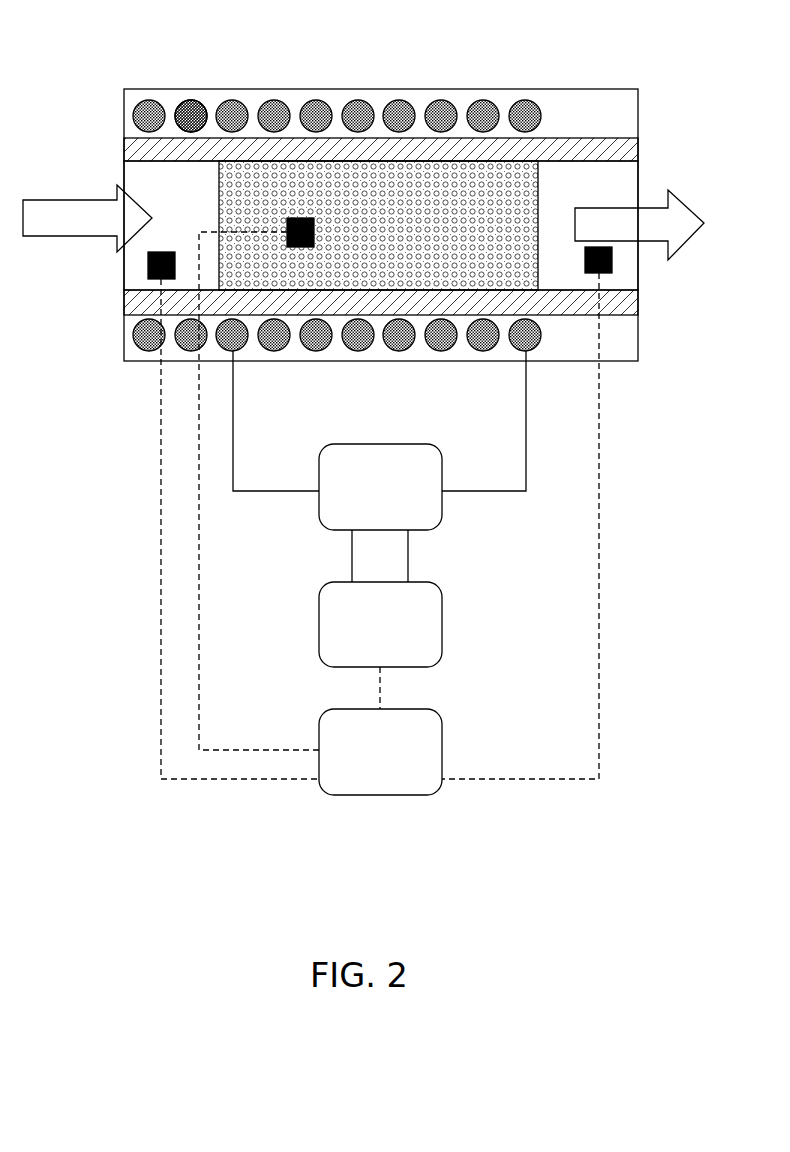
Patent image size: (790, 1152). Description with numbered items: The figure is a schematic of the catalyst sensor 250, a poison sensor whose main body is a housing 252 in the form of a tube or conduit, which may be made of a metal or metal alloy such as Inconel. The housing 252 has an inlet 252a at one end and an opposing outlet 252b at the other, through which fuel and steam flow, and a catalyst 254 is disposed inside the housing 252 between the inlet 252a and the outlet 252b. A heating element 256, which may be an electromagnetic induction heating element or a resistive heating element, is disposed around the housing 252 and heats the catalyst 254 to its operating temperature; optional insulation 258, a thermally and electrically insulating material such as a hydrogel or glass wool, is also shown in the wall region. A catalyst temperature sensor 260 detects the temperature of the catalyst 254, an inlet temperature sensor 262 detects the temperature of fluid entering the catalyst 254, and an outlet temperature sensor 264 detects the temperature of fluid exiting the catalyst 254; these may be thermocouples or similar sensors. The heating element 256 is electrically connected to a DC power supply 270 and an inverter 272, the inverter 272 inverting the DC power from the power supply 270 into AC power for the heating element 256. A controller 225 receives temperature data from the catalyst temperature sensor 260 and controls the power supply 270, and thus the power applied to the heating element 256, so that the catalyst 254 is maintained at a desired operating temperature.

The catalyst sensor 250 is at (104, 76).
The housing 252 is at (171, 138).
The inlet 252a is at (146, 185).
The outlet 252b is at (616, 173).
The catalyst 254 is at (540, 189).
The heating element 256 is at (318, 100).
The insulation 258 is at (211, 104).
The catalyst temperature sensor 260 is at (382, 185).
The inlet temperature sensor 262 is at (147, 265).
The outlet temperature sensor 264 is at (613, 260).
The power supply 270 is at (436, 647).
The inverter 272 is at (362, 510).
The controller 225 is at (362, 776).